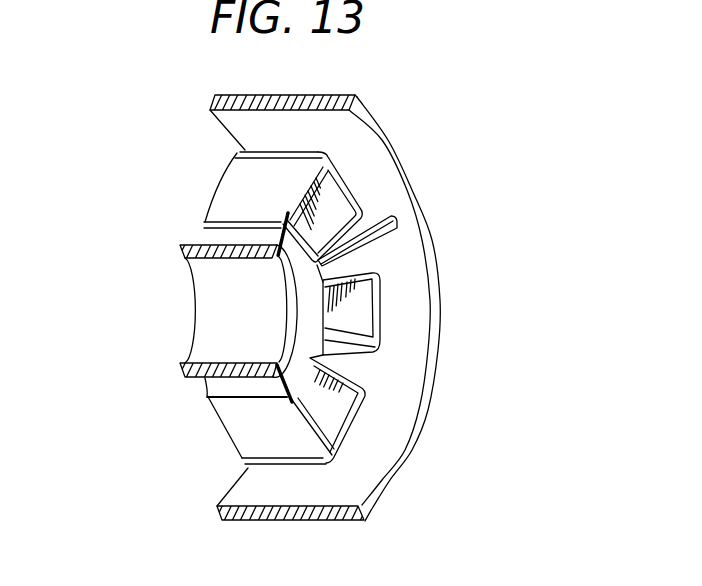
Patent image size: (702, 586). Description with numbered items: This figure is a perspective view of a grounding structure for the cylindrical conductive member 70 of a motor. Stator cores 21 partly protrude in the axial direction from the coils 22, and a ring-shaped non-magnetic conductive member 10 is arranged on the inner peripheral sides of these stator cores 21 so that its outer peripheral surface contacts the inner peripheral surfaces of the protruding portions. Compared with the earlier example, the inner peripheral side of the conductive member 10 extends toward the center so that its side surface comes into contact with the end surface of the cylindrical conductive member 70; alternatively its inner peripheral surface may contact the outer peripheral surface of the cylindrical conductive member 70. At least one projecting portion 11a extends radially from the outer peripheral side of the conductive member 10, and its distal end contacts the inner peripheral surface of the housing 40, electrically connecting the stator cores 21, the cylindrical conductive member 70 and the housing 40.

The conductive member 10 is at (290, 382).
The projecting portion 11a is at (393, 227).
The stator core 21 is at (322, 200).
The coil 22 is at (242, 190).
The housing 40 is at (407, 287).
The cylindrical conductive member 70 is at (215, 305).